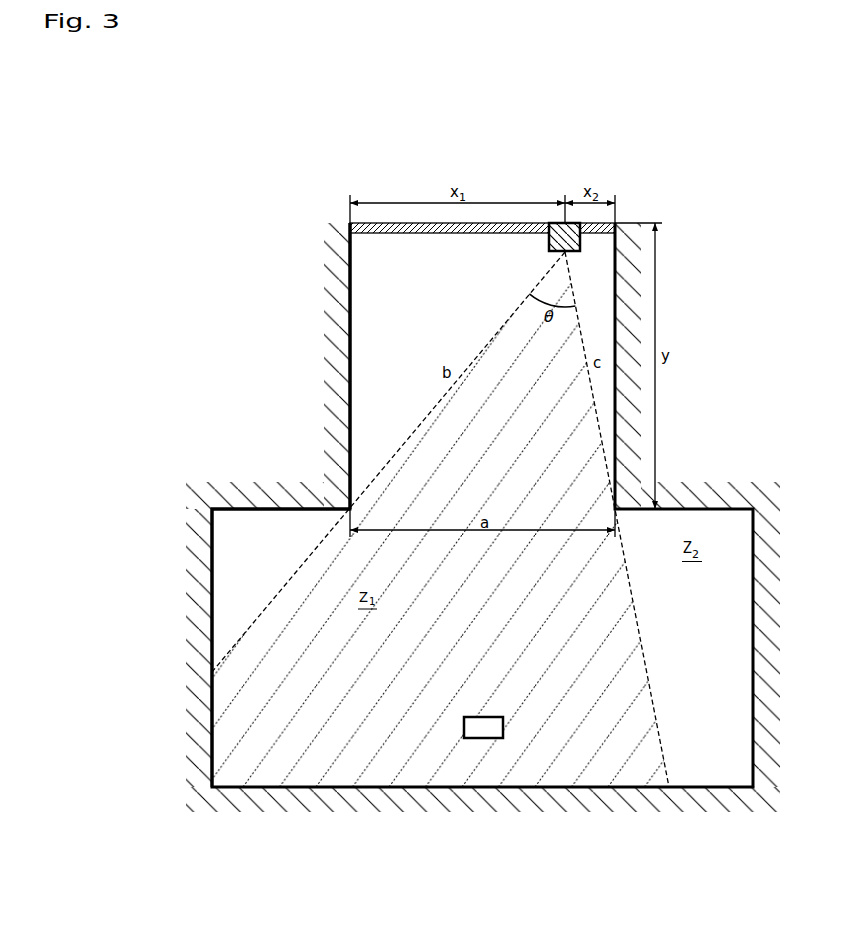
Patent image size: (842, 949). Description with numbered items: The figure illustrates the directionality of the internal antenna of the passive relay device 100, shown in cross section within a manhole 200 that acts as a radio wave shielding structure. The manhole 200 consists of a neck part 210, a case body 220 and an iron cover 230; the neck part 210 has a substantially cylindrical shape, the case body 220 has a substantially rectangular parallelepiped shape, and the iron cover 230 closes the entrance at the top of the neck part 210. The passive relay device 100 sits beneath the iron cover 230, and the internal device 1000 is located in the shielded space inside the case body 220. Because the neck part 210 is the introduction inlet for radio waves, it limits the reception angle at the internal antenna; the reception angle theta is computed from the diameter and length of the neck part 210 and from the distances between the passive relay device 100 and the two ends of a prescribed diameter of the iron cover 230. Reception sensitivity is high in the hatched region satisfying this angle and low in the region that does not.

The passive relay device 100 is at (549, 241).
The manhole 200 is at (483, 517).
The neck part 210 is at (350, 323).
The case body 220 is at (275, 509).
The iron cover 230 is at (406, 234).
The internal device 1000 is at (503, 727).